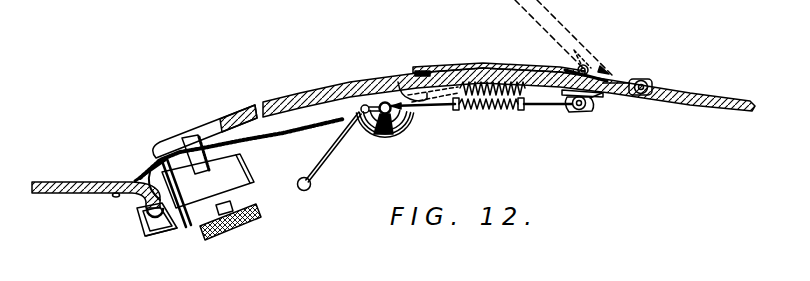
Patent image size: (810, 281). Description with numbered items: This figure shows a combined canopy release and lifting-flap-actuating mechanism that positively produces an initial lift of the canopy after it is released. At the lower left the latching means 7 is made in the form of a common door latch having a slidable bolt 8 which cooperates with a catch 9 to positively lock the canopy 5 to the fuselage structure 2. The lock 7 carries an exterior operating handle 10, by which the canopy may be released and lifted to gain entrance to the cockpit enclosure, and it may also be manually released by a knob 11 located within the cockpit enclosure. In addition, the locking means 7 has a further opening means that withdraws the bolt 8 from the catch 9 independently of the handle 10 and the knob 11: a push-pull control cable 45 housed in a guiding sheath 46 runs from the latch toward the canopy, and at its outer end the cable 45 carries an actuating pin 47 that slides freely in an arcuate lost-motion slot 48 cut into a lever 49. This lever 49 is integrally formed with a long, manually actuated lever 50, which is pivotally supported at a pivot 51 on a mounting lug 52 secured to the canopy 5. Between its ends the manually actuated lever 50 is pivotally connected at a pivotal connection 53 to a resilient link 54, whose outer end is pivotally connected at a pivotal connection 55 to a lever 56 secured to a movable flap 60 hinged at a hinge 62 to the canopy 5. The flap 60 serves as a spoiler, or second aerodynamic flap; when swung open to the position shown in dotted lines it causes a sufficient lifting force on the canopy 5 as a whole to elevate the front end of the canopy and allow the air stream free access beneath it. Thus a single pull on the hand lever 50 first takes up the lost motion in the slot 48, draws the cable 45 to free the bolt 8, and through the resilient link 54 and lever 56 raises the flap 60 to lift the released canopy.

The fuselage structure 2 is at (62, 182).
The canopy 5 is at (312, 98).
The latching means 7 is at (242, 183).
The slidable bolt 8 is at (175, 222).
The catch 9 is at (140, 216).
The exterior operating handle 10 is at (172, 133).
The knob 11 is at (254, 212).
The push-pull control cable 45 is at (334, 149).
The guiding sheath 46 is at (278, 145).
The actuating pin 47 is at (390, 134).
The arcuate lost-motion slot 48 is at (410, 123).
The lever 49 is at (417, 112).
The manually actuated lever 50 is at (311, 181).
The pivot 51 is at (380, 143).
The mounting lug 52 is at (402, 67).
The pivotal connection 53 is at (364, 100).
The resilient link 54 is at (535, 110).
The pivotal connection 55 is at (581, 110).
The lever 56 is at (593, 102).
The movable flap 60 is at (500, 71).
The hinge 62 is at (647, 81).